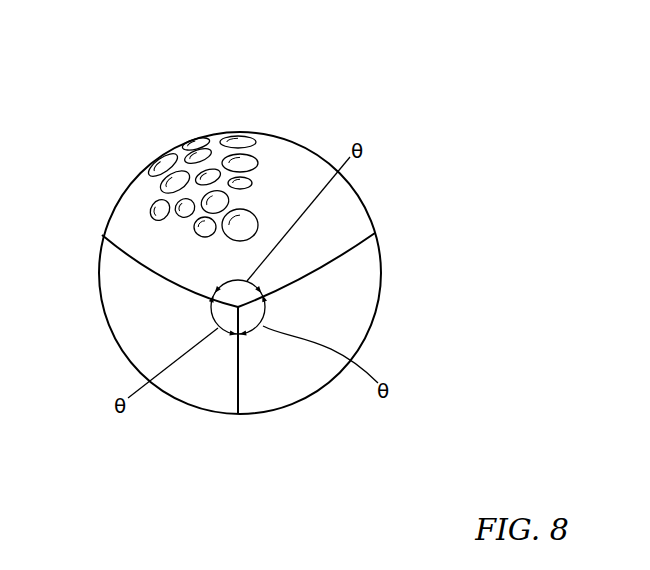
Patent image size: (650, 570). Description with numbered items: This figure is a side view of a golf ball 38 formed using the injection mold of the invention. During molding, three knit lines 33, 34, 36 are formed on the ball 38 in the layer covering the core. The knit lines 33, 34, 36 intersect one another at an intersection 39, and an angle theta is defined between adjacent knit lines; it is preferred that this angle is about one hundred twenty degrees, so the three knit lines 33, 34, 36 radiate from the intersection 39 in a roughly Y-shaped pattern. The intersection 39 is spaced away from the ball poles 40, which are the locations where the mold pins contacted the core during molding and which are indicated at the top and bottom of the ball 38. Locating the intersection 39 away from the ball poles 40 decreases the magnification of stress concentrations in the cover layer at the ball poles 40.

The knit line 33 is at (124, 243).
The knit line 34 is at (343, 257).
The knit line 36 is at (237, 378).
The ball 38 is at (399, 90).
The intersection 39 is at (263, 310).
The ball poles 40 is at (238, 119).